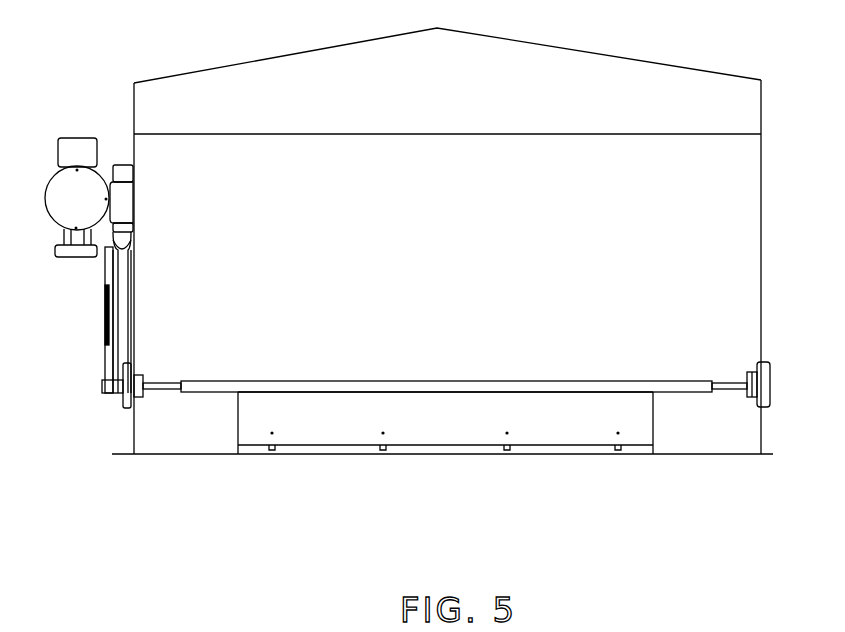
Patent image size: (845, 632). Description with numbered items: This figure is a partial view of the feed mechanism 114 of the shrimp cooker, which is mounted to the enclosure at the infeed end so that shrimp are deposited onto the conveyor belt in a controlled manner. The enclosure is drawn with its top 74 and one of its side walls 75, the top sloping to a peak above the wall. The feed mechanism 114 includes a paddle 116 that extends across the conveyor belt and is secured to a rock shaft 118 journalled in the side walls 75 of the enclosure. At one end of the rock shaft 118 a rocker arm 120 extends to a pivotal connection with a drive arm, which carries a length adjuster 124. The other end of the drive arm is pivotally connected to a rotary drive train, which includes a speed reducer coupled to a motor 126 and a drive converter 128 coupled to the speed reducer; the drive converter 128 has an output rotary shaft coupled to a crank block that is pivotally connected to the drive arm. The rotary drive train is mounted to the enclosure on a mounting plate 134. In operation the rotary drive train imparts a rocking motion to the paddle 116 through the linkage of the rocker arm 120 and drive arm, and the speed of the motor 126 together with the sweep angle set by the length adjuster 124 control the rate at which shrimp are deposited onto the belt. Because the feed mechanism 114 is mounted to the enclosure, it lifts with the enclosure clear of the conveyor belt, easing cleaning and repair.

The top 74 is at (643, 75).
The side walls 75 is at (763, 178).
The feed mechanism 114 is at (168, 485).
The paddle 116 is at (652, 431).
The rock shaft 118 is at (170, 382).
The rocker arm 120 is at (103, 357).
The length adjuster 124 is at (135, 264).
The motor 126 is at (55, 195).
The drive converter 128 is at (80, 140).
The mounting plate 134 is at (135, 172).